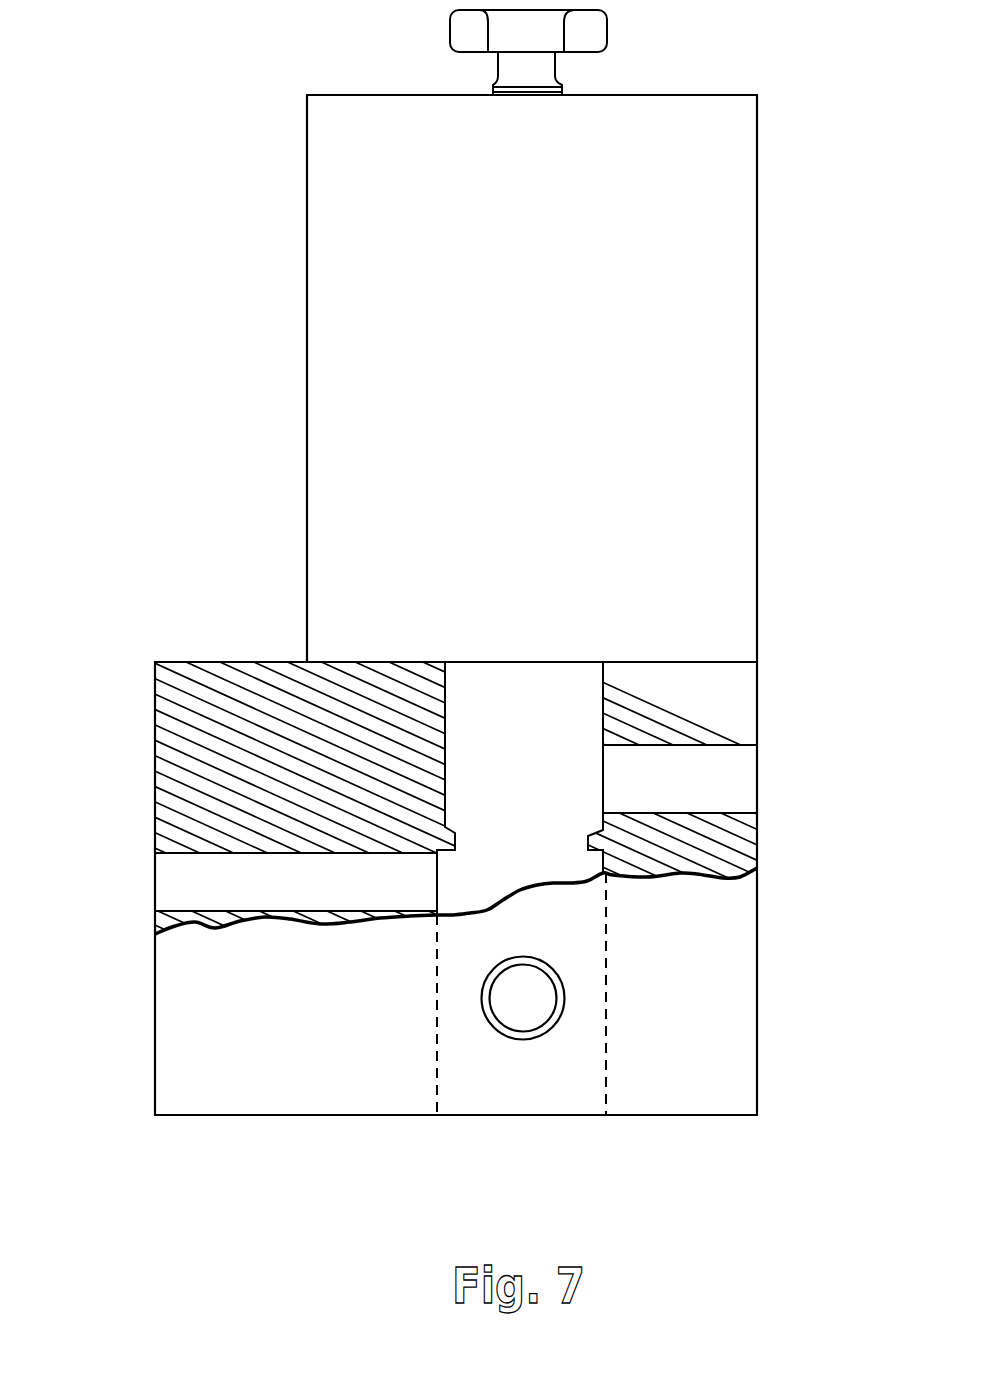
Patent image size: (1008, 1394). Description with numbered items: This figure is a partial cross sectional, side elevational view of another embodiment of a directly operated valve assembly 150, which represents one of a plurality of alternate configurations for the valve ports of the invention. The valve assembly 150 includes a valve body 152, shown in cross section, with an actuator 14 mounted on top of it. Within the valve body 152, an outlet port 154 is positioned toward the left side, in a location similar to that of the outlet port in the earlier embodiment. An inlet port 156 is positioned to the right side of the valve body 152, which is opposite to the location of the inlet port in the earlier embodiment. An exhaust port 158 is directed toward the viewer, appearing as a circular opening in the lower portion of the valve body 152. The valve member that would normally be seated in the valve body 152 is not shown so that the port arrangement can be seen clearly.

The valve assembly 150 is at (160, 431).
The actuator 14 is at (758, 445).
The valve body 152 is at (217, 671).
The outlet port 154 is at (197, 882).
The inlet port 156 is at (723, 767).
The exhaust port 158 is at (563, 995).